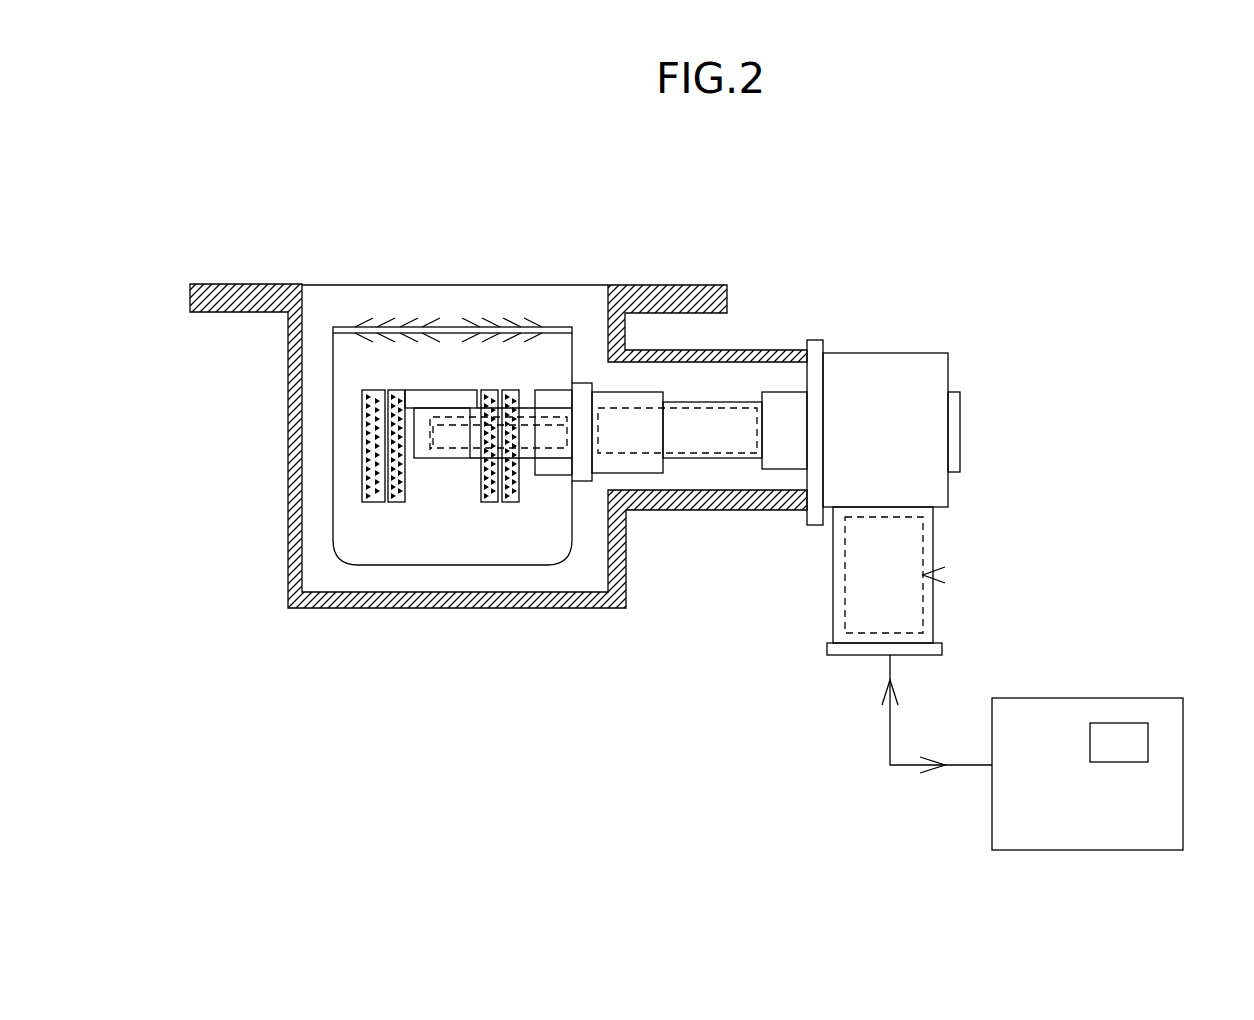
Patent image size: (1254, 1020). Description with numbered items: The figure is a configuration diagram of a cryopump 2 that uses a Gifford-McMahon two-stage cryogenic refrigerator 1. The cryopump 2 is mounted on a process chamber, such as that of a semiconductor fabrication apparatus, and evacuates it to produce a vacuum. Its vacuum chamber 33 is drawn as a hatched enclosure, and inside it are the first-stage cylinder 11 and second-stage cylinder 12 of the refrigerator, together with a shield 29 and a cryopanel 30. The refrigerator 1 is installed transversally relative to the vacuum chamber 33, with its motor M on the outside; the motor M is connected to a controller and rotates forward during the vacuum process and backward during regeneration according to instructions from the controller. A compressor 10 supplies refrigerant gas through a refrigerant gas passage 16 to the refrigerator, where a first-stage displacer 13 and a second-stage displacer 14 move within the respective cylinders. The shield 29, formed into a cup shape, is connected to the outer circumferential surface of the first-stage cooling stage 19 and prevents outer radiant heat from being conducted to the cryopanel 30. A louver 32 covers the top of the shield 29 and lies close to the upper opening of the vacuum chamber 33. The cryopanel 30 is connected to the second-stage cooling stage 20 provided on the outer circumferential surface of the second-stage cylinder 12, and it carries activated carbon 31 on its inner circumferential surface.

The cryogenic refrigerator 1 is at (911, 343).
The cryopump 2 is at (889, 179).
The compressor 10 is at (1150, 806).
The first-stage cylinder 11 is at (754, 395).
The second-stage cylinder 12 is at (424, 463).
The first-stage displacer 13 is at (722, 440).
The second-stage displacer 14 is at (457, 440).
The refrigerant gas passage 16 is at (889, 736).
The first-stage cooling stage 19 is at (597, 381).
The second-stage cooling stage 20 is at (428, 398).
The shield 29 is at (331, 521).
The cryopanel 30 is at (360, 452).
The activated carbon 31 is at (368, 483).
The louver 32 is at (521, 325).
The vacuum chamber 33 is at (286, 585).
The motor M is at (922, 546).